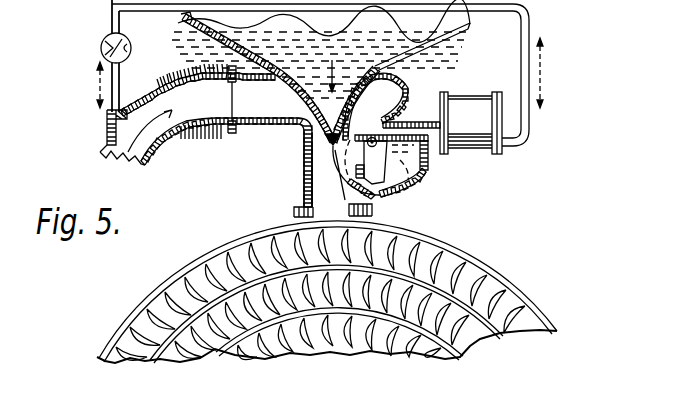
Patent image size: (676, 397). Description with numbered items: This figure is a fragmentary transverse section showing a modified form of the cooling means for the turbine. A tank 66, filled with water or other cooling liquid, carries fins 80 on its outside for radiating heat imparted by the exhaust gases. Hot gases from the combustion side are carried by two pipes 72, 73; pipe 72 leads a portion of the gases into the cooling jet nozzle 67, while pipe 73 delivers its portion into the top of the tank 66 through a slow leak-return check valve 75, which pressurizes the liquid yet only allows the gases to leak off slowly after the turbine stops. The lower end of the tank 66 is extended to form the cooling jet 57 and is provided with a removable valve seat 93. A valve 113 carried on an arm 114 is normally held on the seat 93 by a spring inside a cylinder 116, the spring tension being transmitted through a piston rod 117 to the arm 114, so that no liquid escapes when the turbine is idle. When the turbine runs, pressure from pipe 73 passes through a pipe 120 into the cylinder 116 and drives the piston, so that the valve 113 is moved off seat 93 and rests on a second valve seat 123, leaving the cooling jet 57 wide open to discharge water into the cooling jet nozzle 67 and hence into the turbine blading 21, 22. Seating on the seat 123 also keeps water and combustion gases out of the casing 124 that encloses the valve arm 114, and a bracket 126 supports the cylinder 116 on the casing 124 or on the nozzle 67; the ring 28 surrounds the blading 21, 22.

The pipe 120 is at (529, 24).
The pipe 73 is at (110, 13).
The slow leak-return check valve 75 is at (131, 51).
The pipe 72 is at (206, 135).
The cooling jet 57 is at (296, 125).
The cooling jet nozzle 67 is at (302, 152).
The valve seat 93 is at (303, 168).
The valve 113 is at (306, 183).
The valve seat 123 is at (373, 210).
The fins 80 is at (447, 50).
The tank 66 is at (460, 26).
The piston rod 117 is at (413, 118).
The bracket 126 is at (430, 158).
The casing 124 is at (422, 180).
The arm 114 is at (386, 197).
The cylinder 116 is at (470, 98).
The turbine casing 28 is at (207, 243).
The turbine blading 21 is at (320, 294).
The turbine blading 22 is at (322, 316).